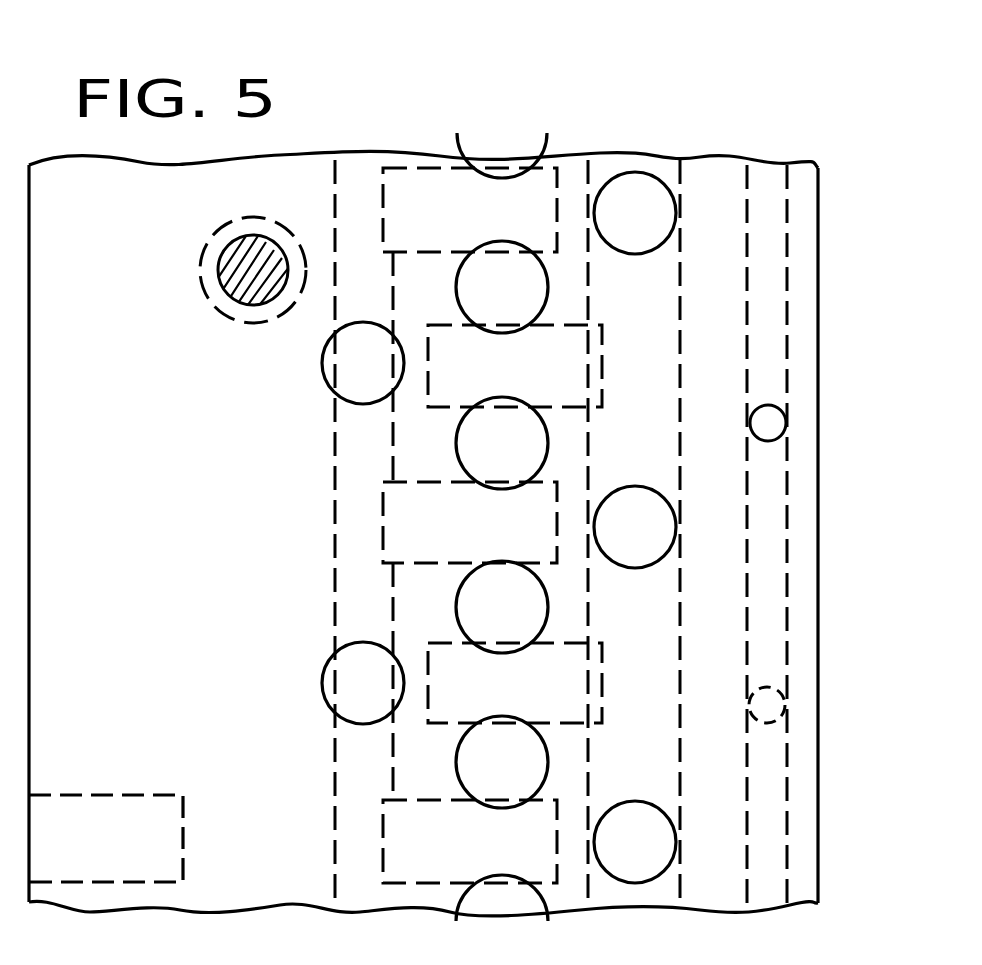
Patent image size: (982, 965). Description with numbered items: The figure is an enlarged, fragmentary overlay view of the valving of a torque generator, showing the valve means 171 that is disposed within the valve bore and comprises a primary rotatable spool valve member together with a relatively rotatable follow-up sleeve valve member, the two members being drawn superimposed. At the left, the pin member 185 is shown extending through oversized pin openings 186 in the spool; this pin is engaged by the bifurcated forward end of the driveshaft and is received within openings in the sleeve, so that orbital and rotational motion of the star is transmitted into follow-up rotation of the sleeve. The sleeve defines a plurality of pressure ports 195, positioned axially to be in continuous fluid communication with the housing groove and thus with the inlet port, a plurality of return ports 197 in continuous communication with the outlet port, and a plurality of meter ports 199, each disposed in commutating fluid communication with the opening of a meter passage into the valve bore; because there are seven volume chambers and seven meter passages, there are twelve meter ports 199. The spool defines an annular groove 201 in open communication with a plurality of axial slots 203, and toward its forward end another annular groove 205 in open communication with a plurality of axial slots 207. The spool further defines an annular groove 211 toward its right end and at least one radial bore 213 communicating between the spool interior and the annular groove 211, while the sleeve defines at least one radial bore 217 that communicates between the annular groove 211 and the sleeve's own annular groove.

The valve means 171 is at (592, 150).
The pin member 185 is at (250, 262).
The oversized pin openings 186 is at (212, 292).
The pressure ports 195 is at (610, 240).
The return ports 197 is at (358, 362).
The meter ports 199 is at (495, 160).
The annular groove 201 is at (640, 447).
The axial slots 203 is at (586, 387).
The annular groove 205 is at (370, 585).
The axial slots 207 is at (455, 198).
The annular groove 211 is at (760, 208).
The radial bore 213 is at (767, 705).
The radial bore 217 is at (770, 422).